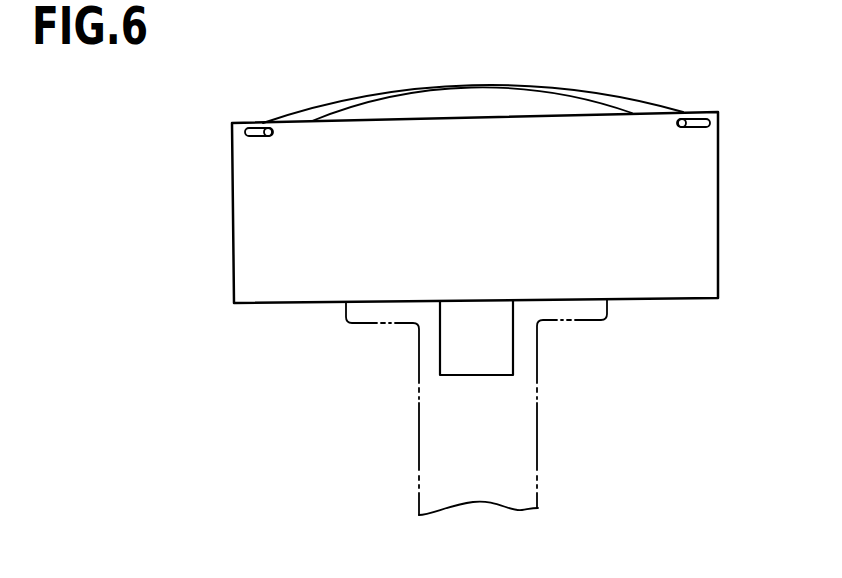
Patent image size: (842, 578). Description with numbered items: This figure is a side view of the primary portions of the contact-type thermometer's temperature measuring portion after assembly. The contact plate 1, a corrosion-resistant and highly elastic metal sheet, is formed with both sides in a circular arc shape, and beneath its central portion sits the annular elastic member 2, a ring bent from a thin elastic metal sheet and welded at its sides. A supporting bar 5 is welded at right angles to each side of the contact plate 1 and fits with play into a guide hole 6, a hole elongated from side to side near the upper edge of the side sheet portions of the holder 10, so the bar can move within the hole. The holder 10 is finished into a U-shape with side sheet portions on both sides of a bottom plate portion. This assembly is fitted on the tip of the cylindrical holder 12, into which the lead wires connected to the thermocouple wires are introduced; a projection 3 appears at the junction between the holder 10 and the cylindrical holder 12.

The contact plate 1 is at (473, 85).
The annular elastic member 2 is at (365, 101).
The projection / boss 3 is at (505, 347).
The supporting bar 5 is at (262, 128).
The guide hole 6 is at (267, 136).
The holder 10 is at (683, 292).
The cylindrical holder 12 is at (538, 437).